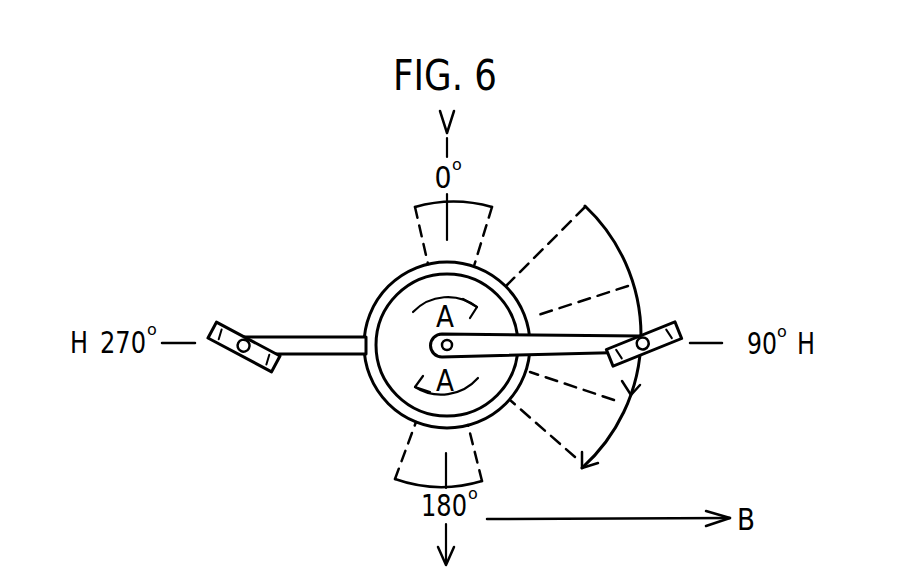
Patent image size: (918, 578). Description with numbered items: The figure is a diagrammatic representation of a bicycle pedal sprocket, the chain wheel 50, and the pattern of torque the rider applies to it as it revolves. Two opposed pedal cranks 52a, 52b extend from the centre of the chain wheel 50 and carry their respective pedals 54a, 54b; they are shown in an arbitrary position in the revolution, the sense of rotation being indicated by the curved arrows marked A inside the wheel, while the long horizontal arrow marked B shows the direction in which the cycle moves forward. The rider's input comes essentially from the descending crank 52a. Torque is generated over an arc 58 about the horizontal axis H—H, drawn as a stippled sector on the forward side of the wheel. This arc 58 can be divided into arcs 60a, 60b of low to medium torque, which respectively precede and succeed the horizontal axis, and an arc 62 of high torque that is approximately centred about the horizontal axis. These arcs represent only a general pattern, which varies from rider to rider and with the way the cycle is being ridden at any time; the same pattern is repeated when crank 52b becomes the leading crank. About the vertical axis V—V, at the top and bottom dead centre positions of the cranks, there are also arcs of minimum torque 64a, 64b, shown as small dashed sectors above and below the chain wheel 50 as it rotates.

The chain wheel 50 is at (373, 380).
The pedal crank 52a is at (543, 337).
The pedal crank 52b is at (330, 336).
The pedal 54a is at (666, 333).
The pedal 54b is at (228, 333).
The arc 58 is at (627, 267).
The arc of low to medium torque 60a is at (598, 225).
The arc of low to medium torque 60b is at (572, 443).
The arc of high torque 62 is at (627, 377).
The arc of minimum torque 64a is at (423, 233).
The arc of minimum torque 64b is at (408, 466).